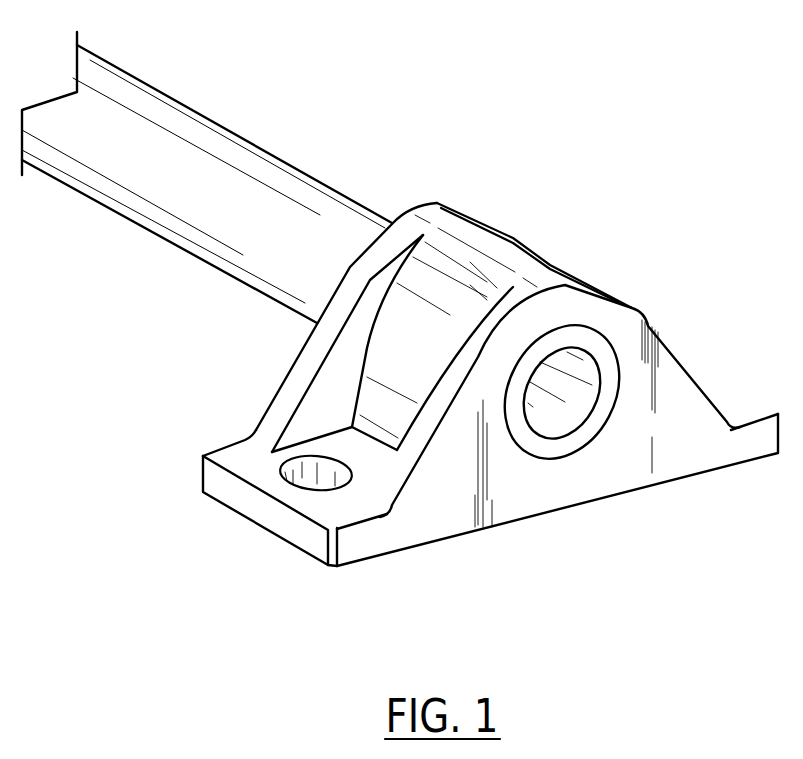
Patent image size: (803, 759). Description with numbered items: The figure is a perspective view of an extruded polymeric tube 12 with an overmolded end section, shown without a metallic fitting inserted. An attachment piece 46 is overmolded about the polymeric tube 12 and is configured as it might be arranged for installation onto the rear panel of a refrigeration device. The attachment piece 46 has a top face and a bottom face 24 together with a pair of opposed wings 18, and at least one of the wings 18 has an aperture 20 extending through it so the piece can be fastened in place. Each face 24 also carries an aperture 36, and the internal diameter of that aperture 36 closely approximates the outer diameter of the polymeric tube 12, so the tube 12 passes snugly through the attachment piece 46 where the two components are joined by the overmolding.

The extruded polymeric tube 12 is at (196, 130).
The opposed wings 18 is at (328, 522).
The aperture 20 is at (276, 460).
The face 24 is at (543, 494).
The aperture 36 is at (607, 430).
The attachment piece 46 is at (637, 302).